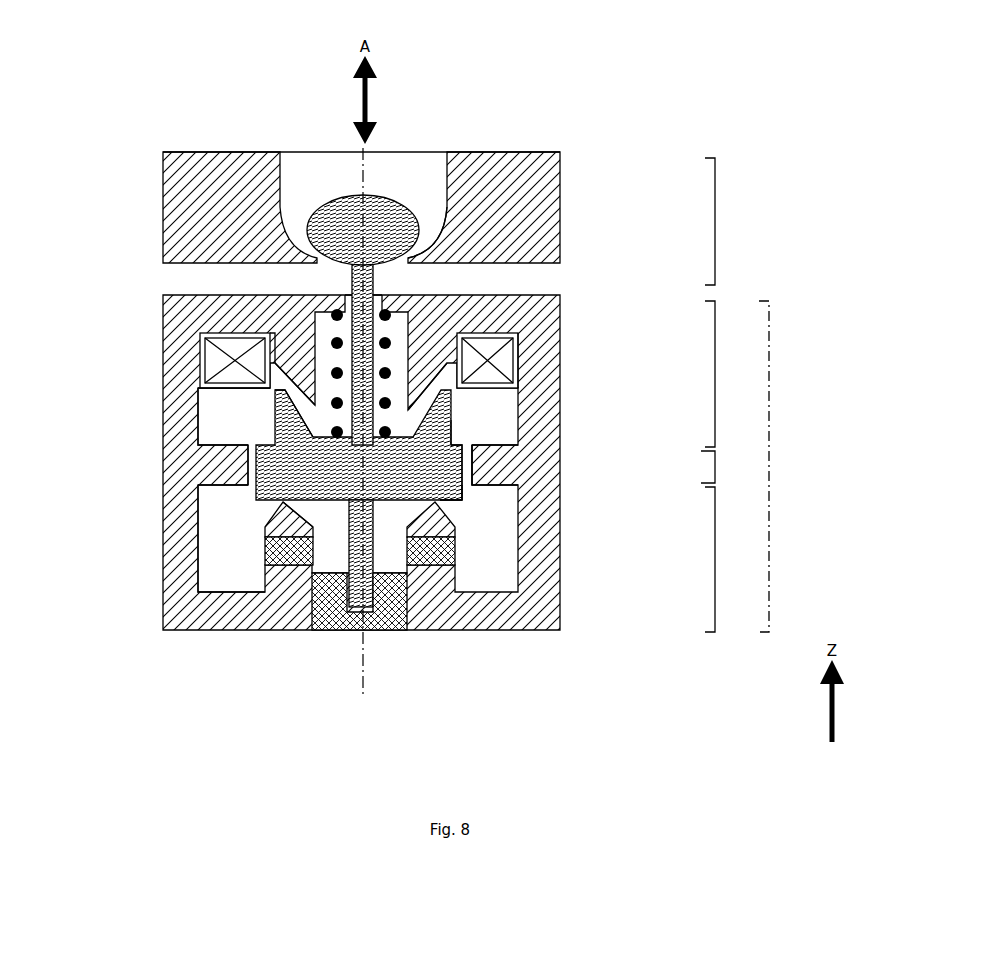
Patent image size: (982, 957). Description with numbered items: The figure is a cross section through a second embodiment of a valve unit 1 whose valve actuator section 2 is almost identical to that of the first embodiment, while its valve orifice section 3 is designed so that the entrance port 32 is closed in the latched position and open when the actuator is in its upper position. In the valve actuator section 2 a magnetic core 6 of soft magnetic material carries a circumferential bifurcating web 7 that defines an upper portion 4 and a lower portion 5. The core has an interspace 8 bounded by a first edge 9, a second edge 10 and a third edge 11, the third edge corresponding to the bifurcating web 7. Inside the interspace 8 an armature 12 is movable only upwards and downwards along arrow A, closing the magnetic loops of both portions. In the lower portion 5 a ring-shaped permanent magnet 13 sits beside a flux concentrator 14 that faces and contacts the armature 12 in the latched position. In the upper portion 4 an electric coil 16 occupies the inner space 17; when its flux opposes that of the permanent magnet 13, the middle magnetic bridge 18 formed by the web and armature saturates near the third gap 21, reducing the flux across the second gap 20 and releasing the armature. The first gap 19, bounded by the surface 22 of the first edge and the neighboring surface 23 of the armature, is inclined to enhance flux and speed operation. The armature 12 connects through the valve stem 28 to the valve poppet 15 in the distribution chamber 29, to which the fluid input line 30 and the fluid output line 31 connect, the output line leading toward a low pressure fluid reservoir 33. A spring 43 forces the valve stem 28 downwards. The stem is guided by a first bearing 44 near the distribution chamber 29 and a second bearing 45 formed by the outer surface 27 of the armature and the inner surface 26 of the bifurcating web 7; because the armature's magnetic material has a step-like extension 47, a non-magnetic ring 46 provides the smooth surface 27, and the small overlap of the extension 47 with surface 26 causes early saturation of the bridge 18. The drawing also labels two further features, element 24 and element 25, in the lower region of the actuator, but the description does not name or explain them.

The valve unit 1 is at (681, 112).
The valve actuator section 2 is at (771, 469).
The valve orifice section 3 is at (716, 223).
The upper portion 4 is at (716, 380).
The lower portion 5 is at (716, 551).
The magnetic core 6 is at (549, 629).
The bifurcating web 7 is at (511, 458).
The interspace 8 is at (257, 420).
The first edge 9 is at (443, 373).
The second edge 10 is at (287, 504).
The third edge 11 is at (478, 468).
The armature 12 is at (317, 492).
The permanent magnet 13 is at (459, 502).
The flux concentrator 14 is at (448, 553).
The valve poppet 15 is at (352, 286).
The electric coil 16 is at (490, 352).
The inner space 17 is at (521, 348).
The middle magnetic bridge 18 is at (716, 469).
The first gap 19 is at (293, 397).
The second gap 20 is at (258, 510).
The third gap 21 is at (466, 483).
The surface of the first edge 22 is at (281, 370).
The neighboring surface of the armature 23 is at (305, 432).
The stem lower part 24 is at (342, 506).
The stop surface 25 is at (295, 506).
The inner surface of the bifurcating web 26 is at (243, 473).
The outer surface of the armature 27 is at (469, 498).
The valve stem 28 is at (318, 228).
The distribution chamber 29 is at (363, 183).
The fluid input line 30 is at (322, 158).
The fluid output line 31 is at (319, 283).
The entrance port 32 is at (405, 252).
The low pressure fluid reservoir 33 is at (340, 217).
The spring 43 is at (387, 444).
The first bearing 44 is at (388, 616).
The second bearing 45 is at (466, 440).
The ring 46 is at (255, 462).
The extension 47 is at (446, 522).